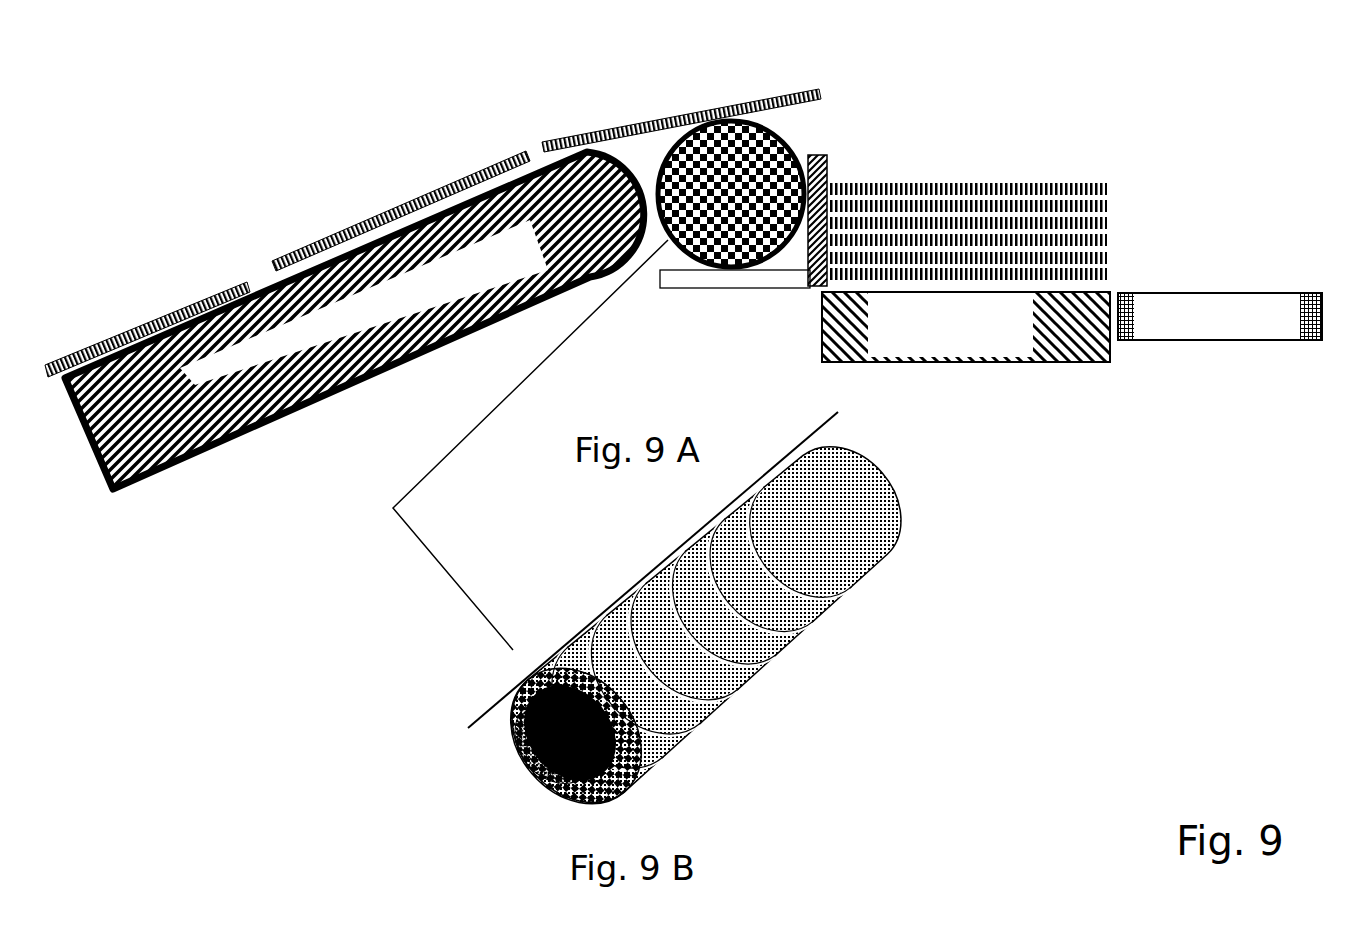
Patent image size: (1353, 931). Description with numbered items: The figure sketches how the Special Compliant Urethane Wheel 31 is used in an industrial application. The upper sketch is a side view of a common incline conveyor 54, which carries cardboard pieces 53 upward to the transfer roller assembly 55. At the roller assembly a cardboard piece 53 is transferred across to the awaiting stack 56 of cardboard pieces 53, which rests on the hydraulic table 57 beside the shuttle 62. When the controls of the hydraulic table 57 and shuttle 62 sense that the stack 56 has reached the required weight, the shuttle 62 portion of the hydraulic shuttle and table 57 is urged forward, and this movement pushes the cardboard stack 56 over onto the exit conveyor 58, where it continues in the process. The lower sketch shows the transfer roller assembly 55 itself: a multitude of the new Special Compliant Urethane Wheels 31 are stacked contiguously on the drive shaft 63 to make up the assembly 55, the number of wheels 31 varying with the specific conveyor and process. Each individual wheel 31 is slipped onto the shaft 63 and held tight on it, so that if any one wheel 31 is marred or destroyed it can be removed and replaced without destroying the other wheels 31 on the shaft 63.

In FIG. 9B, the Special Compliant Urethane Wheel 31 is at (722, 683).
In FIG. 9A, the cardboard piece 53 is at (177, 310).
In FIG. 9A, the incline conveyor 54 is at (262, 421).
In FIG. 9A, the transfer roller assembly 55 is at (802, 127).
In FIG. 9B, the transfer roller assembly 55 is at (760, 639).
In FIG. 9A, the stack 56 is at (988, 182).
In FIG. 9A, the hydraulic table 57 is at (1000, 342).
In FIG. 9A, the exit conveyor 58 is at (1207, 327).
In FIG. 9A, the shuttle 62 is at (723, 290).
In FIG. 9B, the drive shaft 63 is at (550, 750).